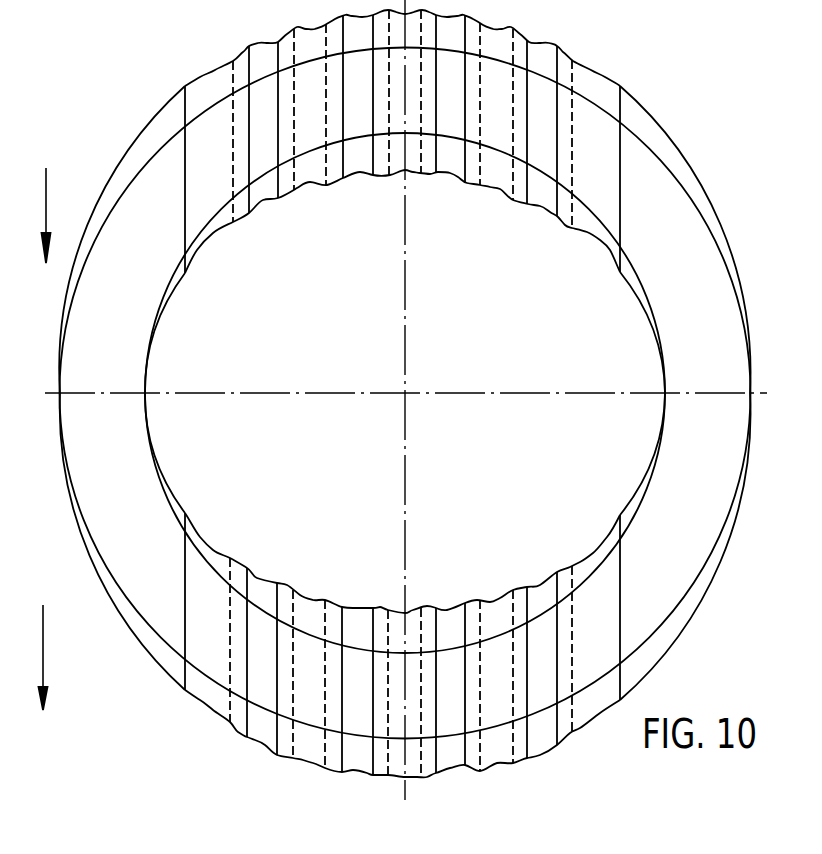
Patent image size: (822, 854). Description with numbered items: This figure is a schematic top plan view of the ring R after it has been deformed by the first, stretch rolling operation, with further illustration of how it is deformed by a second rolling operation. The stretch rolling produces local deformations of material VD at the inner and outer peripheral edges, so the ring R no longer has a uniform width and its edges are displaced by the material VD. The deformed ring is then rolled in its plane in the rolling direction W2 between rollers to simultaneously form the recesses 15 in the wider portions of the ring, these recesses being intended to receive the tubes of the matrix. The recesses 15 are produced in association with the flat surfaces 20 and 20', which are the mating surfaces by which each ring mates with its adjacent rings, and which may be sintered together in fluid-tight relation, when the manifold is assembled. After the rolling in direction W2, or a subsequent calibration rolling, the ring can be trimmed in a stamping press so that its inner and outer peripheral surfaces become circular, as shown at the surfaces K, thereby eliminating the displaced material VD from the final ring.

The recesses 15 is at (200, 181).
The flat surfaces 20 is at (405, 383).
The flat surfaces 20' is at (403, 393).
The local deformations of material VD is at (667, 80).
The rolling direction W2 is at (45, 662).
The circular peripheral surfaces K is at (78, 272).
The ring R is at (685, 247).